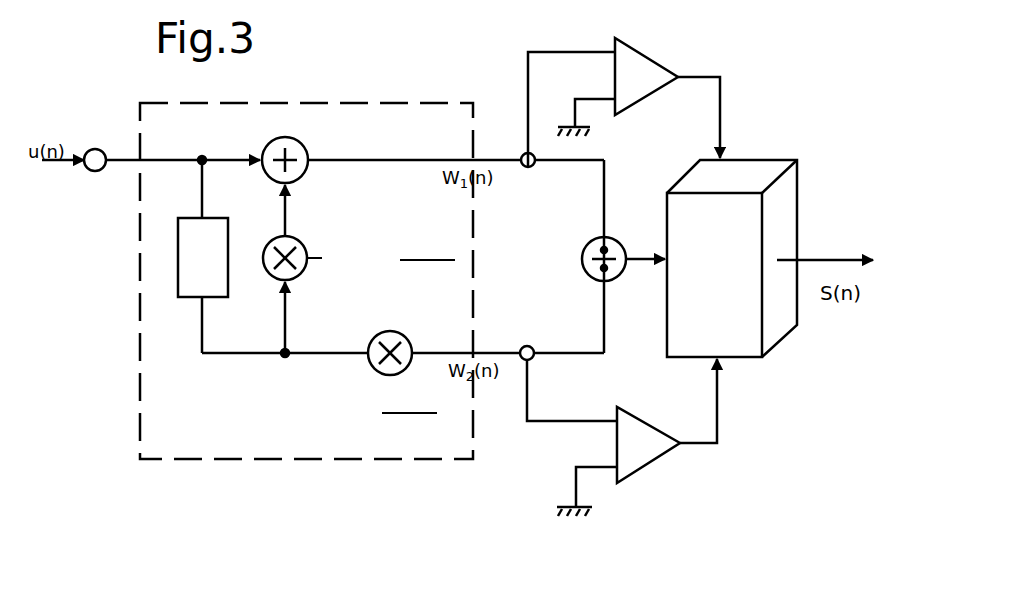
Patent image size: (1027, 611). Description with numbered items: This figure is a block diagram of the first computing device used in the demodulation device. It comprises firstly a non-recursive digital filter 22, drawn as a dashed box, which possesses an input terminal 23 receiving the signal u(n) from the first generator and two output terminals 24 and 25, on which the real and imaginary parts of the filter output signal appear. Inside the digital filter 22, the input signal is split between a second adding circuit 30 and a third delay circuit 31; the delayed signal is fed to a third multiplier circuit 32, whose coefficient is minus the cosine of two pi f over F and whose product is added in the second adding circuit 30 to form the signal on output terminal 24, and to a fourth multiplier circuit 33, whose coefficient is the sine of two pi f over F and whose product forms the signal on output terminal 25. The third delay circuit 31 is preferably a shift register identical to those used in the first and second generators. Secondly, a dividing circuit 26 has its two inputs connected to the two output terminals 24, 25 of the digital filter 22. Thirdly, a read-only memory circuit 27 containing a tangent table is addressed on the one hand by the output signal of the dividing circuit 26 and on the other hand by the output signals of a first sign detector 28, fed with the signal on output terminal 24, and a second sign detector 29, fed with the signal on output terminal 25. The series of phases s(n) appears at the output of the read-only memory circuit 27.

The non-recursive digital filter 22 is at (305, 102).
The input terminal 23 is at (99, 148).
The output terminal 24 is at (533, 166).
The output terminal 25 is at (532, 347).
The dividing circuit 26 is at (580, 262).
The read-only memory circuit 27 is at (797, 213).
The first sign detector 28 is at (655, 60).
The second sign detector 29 is at (643, 420).
The second adding circuit 30 is at (305, 148).
The third delay circuit 31 is at (188, 298).
The third multiplier circuit 32 is at (275, 281).
The fourth multiplier circuit 33 is at (403, 335).